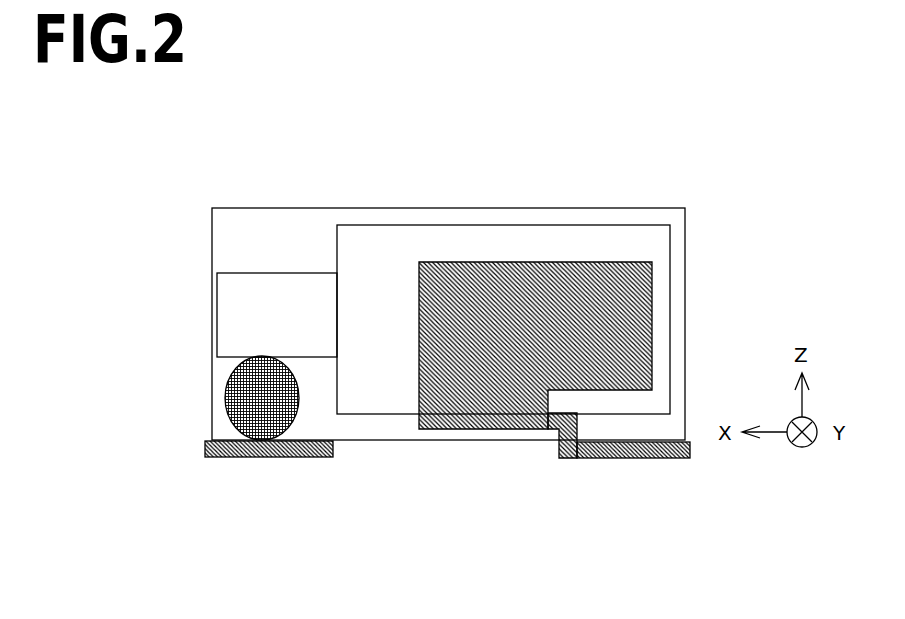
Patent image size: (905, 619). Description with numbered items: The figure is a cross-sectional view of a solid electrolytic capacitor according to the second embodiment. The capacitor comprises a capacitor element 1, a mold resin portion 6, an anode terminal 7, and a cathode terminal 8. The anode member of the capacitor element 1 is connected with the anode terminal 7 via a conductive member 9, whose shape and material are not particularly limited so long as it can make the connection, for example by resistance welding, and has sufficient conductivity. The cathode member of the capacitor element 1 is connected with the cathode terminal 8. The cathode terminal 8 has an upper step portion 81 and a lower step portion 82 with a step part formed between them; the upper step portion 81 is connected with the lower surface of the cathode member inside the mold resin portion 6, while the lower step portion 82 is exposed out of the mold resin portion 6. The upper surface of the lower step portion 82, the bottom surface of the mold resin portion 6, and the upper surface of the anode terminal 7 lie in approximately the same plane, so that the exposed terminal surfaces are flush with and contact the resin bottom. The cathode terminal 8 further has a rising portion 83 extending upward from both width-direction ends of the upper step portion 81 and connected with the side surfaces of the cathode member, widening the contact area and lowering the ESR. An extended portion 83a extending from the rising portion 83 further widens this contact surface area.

The capacitor element 1 is at (360, 396).
The mold resin portion 6 is at (317, 419).
The anode terminal 7 is at (262, 458).
The conductive member 9 is at (300, 436).
The cathode terminal 8 is at (554, 420).
The upper step portion 81 is at (552, 418).
The lower step portion 82 is at (633, 485).
The rising portion 83 is at (502, 397).
The extended portion 83a is at (622, 360).